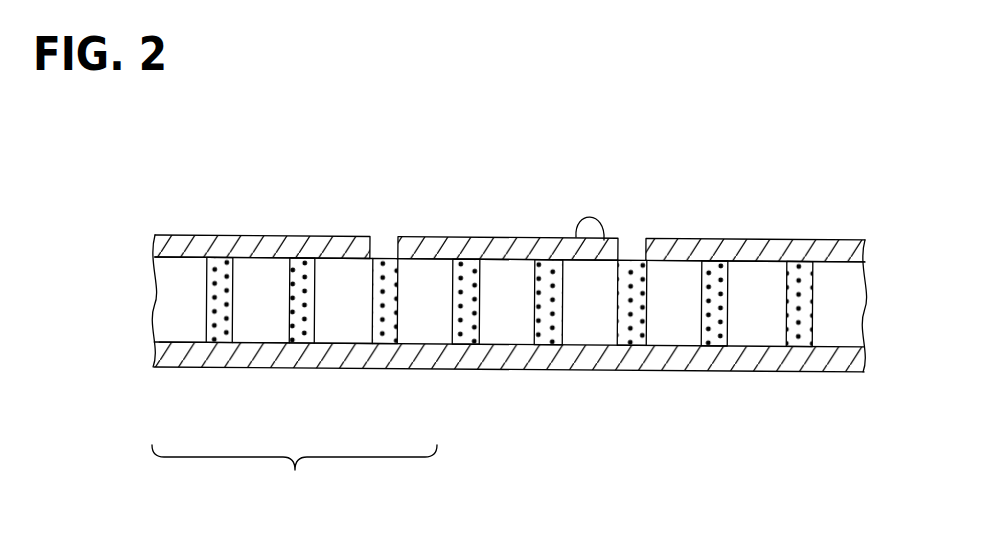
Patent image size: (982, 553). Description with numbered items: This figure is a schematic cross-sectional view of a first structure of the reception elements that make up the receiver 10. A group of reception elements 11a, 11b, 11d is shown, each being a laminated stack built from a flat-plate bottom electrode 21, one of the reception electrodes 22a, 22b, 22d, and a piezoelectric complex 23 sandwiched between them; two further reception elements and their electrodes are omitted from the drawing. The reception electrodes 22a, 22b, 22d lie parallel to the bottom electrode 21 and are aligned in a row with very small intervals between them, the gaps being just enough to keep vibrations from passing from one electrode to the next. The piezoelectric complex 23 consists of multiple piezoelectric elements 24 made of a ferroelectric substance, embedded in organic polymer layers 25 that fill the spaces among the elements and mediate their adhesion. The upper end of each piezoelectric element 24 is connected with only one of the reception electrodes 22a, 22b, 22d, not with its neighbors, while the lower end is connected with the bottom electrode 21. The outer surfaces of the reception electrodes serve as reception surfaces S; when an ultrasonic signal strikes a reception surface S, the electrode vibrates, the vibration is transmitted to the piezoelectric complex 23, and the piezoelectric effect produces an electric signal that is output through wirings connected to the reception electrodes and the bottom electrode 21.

The sensor assembly 10 is at (519, 155).
The reception element 11a is at (542, 214).
The reception element 11b is at (307, 212).
The reception element 11d is at (805, 217).
The bottom electrode 21 is at (837, 363).
The reception electrode 22a is at (487, 236).
The reception electrode 22b is at (252, 234).
The reception electrode 22d is at (748, 238).
The piezoelectric complex 23 is at (294, 478).
The piezoelectric element 24 is at (181, 327).
The organic polymer layer 25 is at (218, 330).
The reception surface S is at (604, 240).